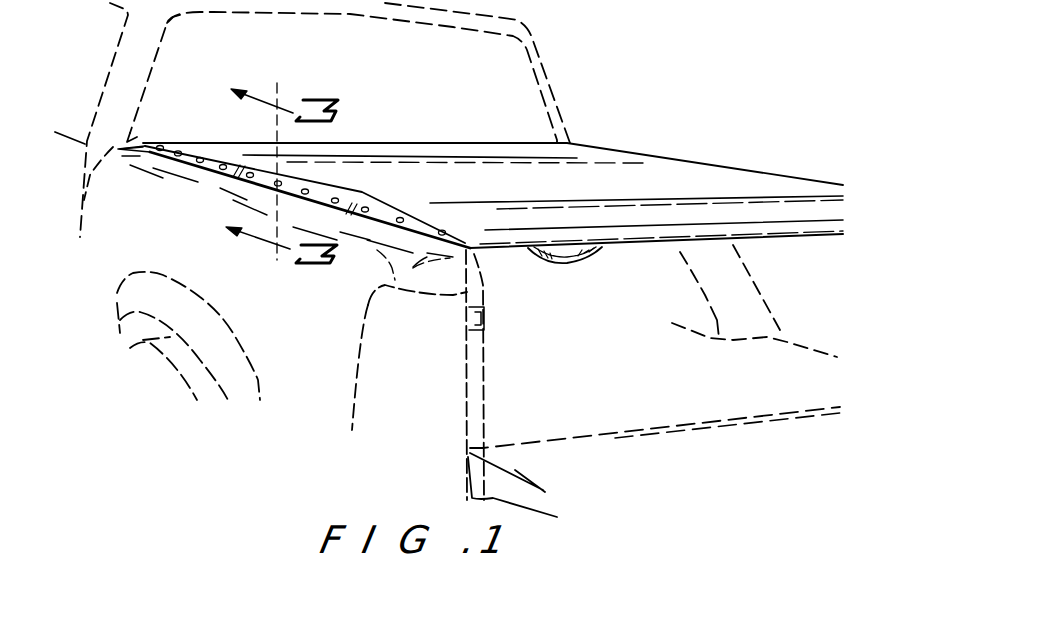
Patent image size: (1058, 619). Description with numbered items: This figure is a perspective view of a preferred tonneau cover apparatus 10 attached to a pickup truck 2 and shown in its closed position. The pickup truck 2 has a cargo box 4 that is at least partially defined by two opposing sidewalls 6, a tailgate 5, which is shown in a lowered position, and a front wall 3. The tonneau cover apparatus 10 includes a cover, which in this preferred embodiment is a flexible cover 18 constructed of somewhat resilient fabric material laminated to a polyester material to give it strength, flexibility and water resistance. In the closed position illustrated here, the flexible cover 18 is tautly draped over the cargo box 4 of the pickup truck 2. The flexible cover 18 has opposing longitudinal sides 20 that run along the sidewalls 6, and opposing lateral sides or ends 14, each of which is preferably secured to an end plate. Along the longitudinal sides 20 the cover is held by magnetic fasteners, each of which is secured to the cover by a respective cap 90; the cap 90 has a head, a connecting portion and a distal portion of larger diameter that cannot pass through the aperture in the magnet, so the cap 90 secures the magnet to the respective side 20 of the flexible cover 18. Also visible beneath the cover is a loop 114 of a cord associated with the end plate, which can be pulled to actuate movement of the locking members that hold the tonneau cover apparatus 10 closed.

The pickup truck 2 is at (547, 57).
The front wall 3 is at (134, 132).
The cargo box 4 is at (138, 244).
The tailgate 5 is at (600, 457).
The sidewalls 6 is at (306, 361).
The tonneau cover apparatus 10 is at (596, 150).
The lateral sides or ends 14 is at (425, 143).
The flexible cover 18 is at (650, 179).
The longitudinal sides 20 is at (762, 172).
The cap 90 is at (317, 191).
The loop 114 is at (597, 263).